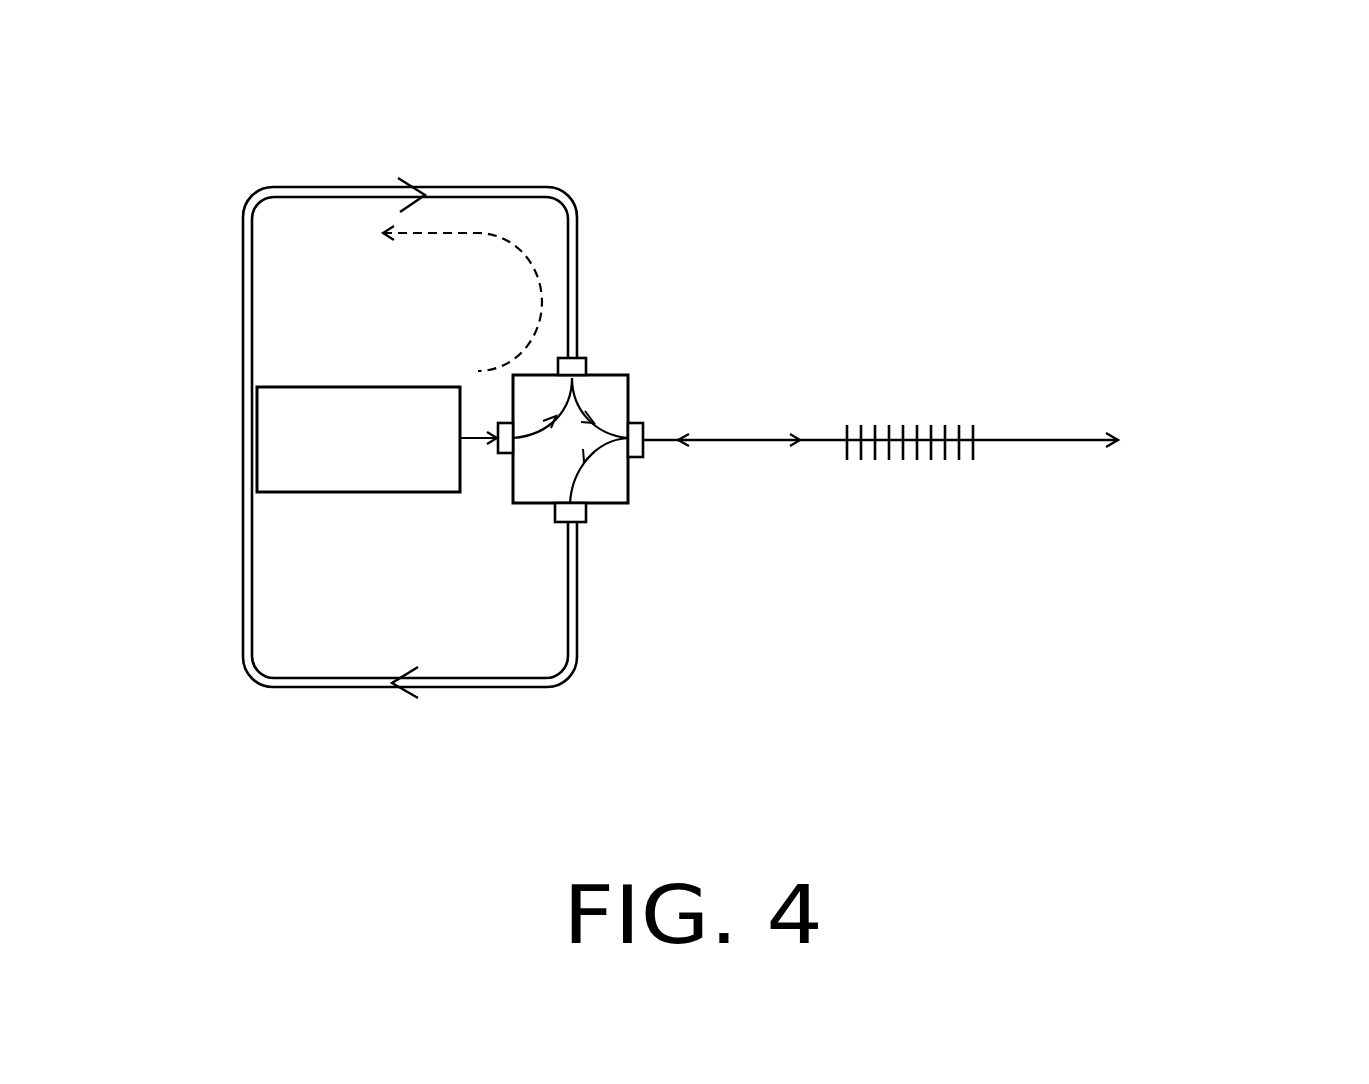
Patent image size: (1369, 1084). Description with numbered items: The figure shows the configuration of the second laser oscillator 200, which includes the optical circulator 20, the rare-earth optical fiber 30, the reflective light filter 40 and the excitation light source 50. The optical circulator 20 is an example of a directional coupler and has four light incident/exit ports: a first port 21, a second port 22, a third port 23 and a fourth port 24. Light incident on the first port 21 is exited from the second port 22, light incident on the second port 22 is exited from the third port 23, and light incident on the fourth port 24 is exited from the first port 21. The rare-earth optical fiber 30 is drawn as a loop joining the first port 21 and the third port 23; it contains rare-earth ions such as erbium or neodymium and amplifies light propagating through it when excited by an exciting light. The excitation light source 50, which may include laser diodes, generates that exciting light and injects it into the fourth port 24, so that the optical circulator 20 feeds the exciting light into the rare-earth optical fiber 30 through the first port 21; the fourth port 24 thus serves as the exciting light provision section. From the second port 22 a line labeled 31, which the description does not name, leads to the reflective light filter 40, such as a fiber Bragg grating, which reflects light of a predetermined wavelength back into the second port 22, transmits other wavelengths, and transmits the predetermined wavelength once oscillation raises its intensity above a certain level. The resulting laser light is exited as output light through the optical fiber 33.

The second laser oscillator 200 is at (122, 95).
The rare-earth optical fiber 30 is at (241, 435).
The excitation light source 50 is at (360, 387).
The optical circulator 20 is at (497, 509).
The first port 21 is at (585, 357).
The second port 22 is at (640, 424).
The third port 23 is at (580, 523).
The fourth port 24 is at (497, 452).
The output optical fiber 31 is at (753, 440).
The reflective light filter 40 is at (925, 427).
The optical fiber 33 is at (1032, 440).